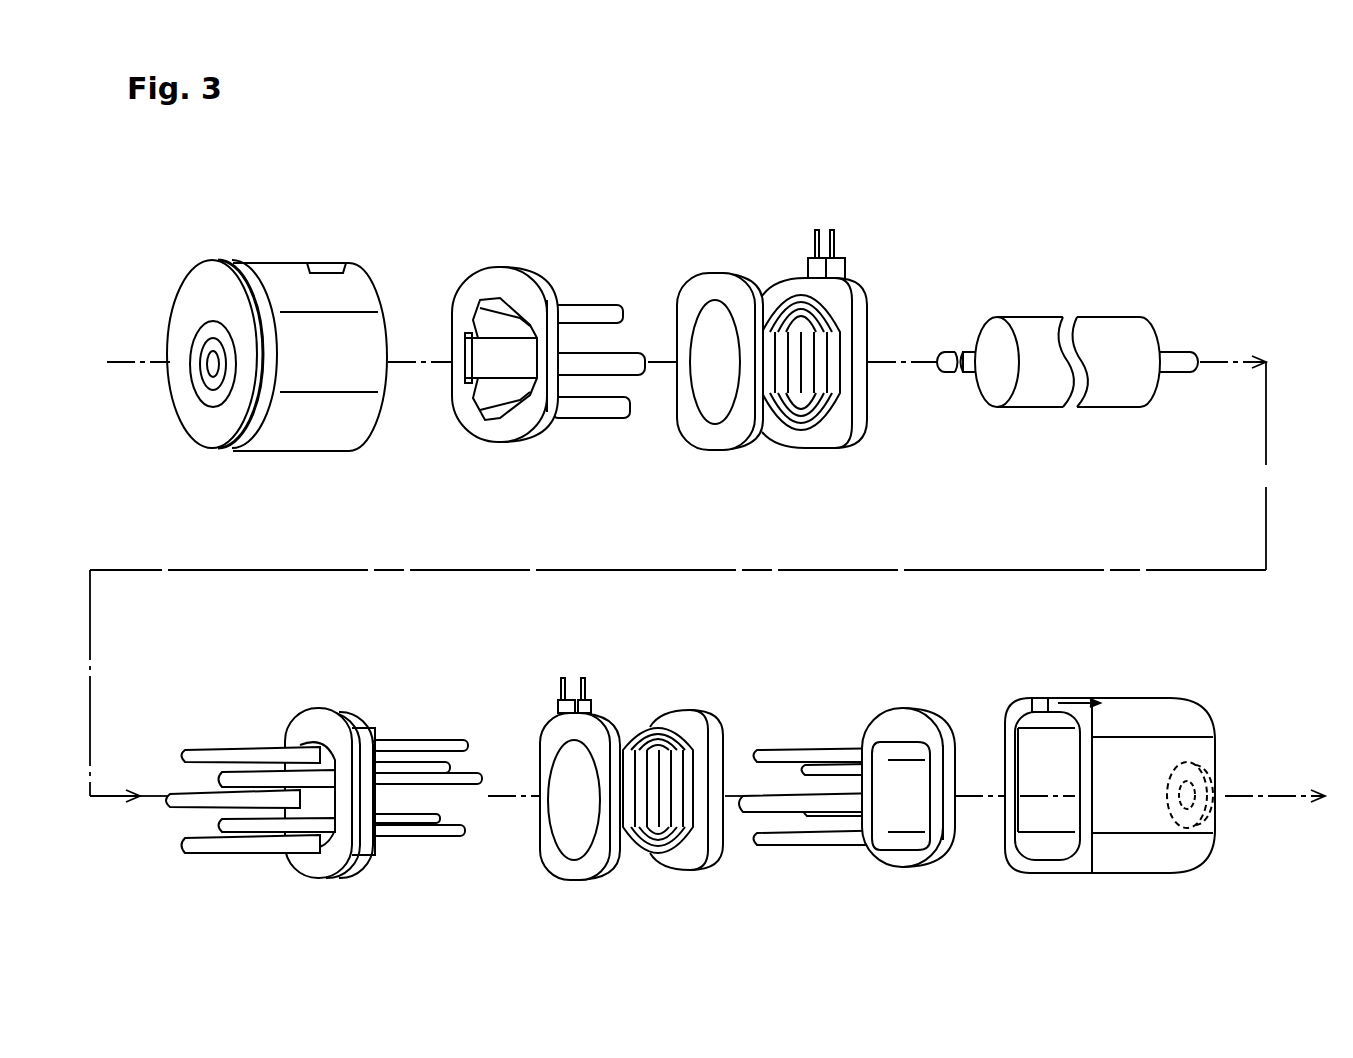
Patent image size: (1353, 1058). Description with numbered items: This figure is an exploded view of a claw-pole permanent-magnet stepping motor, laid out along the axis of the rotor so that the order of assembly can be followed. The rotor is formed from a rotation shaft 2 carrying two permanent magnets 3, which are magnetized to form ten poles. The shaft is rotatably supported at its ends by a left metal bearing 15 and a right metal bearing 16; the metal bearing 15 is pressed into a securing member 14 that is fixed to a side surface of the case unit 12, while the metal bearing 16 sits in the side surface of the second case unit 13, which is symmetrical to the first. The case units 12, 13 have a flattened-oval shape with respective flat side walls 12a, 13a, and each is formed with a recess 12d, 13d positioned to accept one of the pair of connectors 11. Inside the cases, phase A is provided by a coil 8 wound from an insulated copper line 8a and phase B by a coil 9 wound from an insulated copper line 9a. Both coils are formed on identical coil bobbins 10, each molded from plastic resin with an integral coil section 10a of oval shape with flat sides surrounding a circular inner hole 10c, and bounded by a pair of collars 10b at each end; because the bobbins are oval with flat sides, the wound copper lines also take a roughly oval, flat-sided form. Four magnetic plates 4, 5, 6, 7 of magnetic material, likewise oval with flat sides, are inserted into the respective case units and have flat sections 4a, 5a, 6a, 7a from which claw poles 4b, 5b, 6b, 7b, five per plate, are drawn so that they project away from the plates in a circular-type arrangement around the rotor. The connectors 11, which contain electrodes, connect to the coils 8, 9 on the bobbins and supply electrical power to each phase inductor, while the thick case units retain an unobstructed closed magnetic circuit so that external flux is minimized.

The rotation shaft 2 is at (1180, 362).
The permanent magnets 3 is at (1108, 343).
The magnetic plate 4 is at (495, 272).
The flat section 4a is at (450, 325).
The claw poles 4b is at (603, 318).
The magnetic plate 5 is at (259, 789).
The flat section 5a is at (288, 747).
The claw poles 5b is at (203, 856).
The magnetic plate 6 is at (378, 802).
The flat section 6a is at (370, 728).
The claw poles 6b is at (424, 835).
The magnetic plate 7 is at (847, 791).
The flat section 7a is at (943, 823).
The claw poles 7b is at (798, 750).
The coil 8 is at (729, 448).
The insulated copper line 8a is at (790, 343).
The coil 9 is at (673, 815).
The insulated copper line 9a is at (645, 852).
The coil bobbin 10 is at (662, 568).
The coil section 10a is at (753, 448).
The collars 10b is at (865, 320).
The circular inner hole 10c is at (700, 333).
The connectors 11 is at (837, 266).
The case unit 12 is at (298, 276).
The flat side wall 12a is at (330, 343).
The recess 12d is at (322, 263).
The case unit 13 is at (1112, 792).
The flat side wall 13a is at (1000, 815).
The recess 13d is at (1040, 698).
The securing member 14 is at (244, 268).
The metal bearing 15 is at (197, 350).
The metal bearing 16 is at (1210, 762).